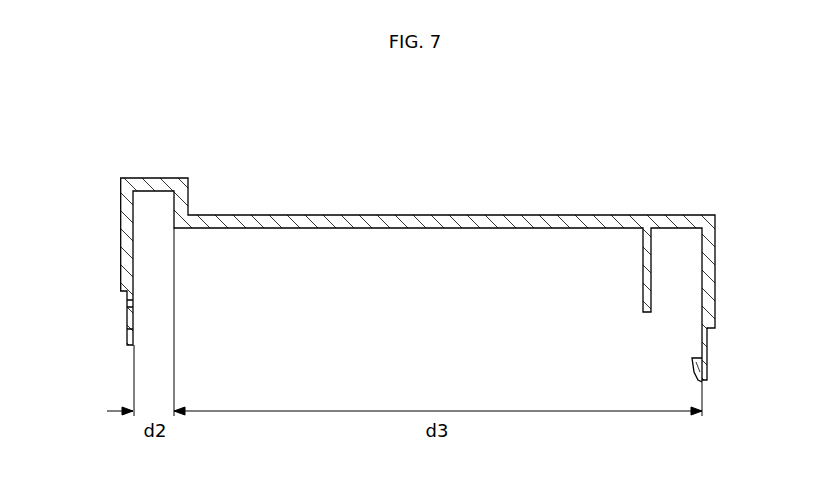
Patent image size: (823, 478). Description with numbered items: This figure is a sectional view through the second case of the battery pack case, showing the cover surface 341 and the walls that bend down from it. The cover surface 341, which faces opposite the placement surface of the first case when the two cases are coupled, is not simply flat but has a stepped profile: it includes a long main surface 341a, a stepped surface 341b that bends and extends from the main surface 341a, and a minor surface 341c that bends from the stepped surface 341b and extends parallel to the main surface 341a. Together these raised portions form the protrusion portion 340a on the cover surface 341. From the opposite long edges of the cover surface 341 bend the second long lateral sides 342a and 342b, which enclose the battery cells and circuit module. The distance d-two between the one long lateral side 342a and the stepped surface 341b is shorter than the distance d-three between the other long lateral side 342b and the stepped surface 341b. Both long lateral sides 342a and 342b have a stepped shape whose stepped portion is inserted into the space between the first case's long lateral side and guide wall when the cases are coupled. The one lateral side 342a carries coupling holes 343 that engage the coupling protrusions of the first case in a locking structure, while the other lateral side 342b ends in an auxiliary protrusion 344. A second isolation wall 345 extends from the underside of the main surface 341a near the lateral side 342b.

The protrusion portion 340a is at (84, 181).
The cover surface 341 is at (315, 119).
The main surface 341a is at (301, 222).
The stepped surface 341b is at (185, 200).
The minor surface 341c is at (134, 186).
The second long lateral side 342a is at (128, 244).
The second long lateral side 342b is at (710, 255).
The coupling hole 343 is at (130, 316).
The auxiliary protrusion 344 is at (693, 382).
The second isolation wall 345 is at (646, 252).